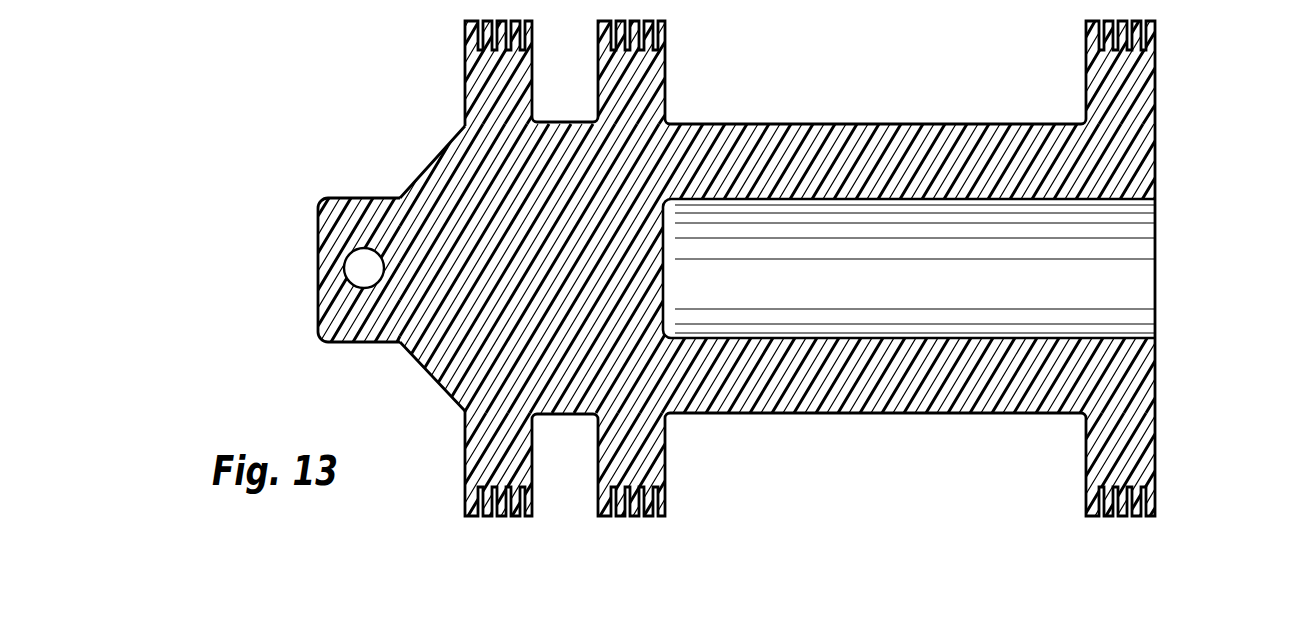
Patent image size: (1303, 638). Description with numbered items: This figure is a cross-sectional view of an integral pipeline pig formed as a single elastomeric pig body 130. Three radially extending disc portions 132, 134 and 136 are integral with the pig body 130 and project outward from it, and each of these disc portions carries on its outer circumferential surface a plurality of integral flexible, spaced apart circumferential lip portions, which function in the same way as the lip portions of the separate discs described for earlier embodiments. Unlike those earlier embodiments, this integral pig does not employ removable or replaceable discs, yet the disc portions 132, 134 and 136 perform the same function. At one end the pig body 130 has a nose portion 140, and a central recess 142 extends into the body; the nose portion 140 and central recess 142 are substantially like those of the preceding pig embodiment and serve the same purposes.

The elastomeric pig body 130 is at (898, 138).
The disc portion 132 is at (487, 77).
The disc portion 134 is at (640, 83).
The disc portion 136 is at (1125, 87).
The nose portion 140 is at (352, 212).
The central recess 142 is at (851, 338).